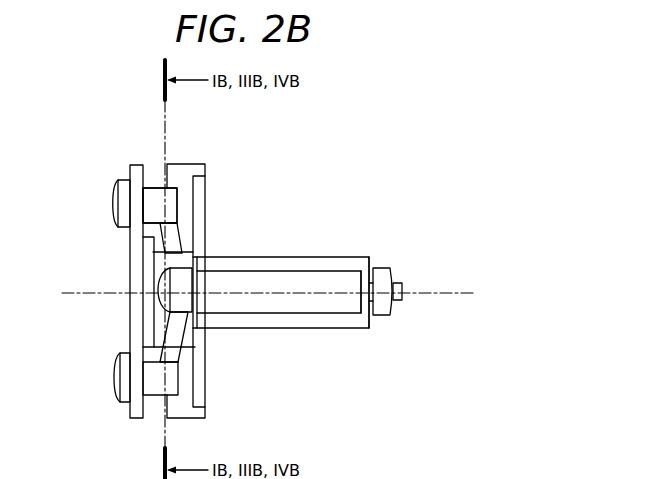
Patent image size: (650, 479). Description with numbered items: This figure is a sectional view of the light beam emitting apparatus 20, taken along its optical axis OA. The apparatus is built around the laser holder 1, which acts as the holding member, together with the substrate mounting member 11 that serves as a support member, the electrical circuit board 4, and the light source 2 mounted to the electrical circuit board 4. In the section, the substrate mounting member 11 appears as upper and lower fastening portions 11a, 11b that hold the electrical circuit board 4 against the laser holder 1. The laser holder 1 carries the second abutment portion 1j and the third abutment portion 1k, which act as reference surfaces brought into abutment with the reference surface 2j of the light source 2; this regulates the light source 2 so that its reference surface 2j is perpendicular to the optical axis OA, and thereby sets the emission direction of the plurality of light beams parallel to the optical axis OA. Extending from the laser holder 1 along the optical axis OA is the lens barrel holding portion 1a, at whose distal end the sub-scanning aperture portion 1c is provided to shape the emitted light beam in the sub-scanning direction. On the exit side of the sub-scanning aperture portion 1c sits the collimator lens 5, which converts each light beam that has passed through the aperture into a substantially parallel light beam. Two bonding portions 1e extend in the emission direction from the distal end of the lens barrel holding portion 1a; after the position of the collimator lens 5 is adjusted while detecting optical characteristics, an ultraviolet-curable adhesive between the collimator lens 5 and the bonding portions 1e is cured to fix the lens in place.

The laser holder 1 is at (203, 168).
The lens barrel holding portion 1a is at (303, 330).
The sub-scanning aperture portion 1c is at (367, 267).
The bonding portions 1e is at (401, 283).
The second abutment portion 1j is at (185, 258).
The third abutment portion 1k is at (178, 337).
The light source 2 is at (148, 305).
The reference surface 2j is at (165, 260).
The electrical circuit board 4 is at (135, 242).
The collimator lens 5 is at (383, 310).
The substrate mounting member 11 is at (173, 235).
The upper fixing screw 11a is at (155, 183).
The lower fixing screw 11b is at (153, 388).
The light beam emitting apparatus 20 is at (342, 201).
The optical axis OA is at (452, 296).